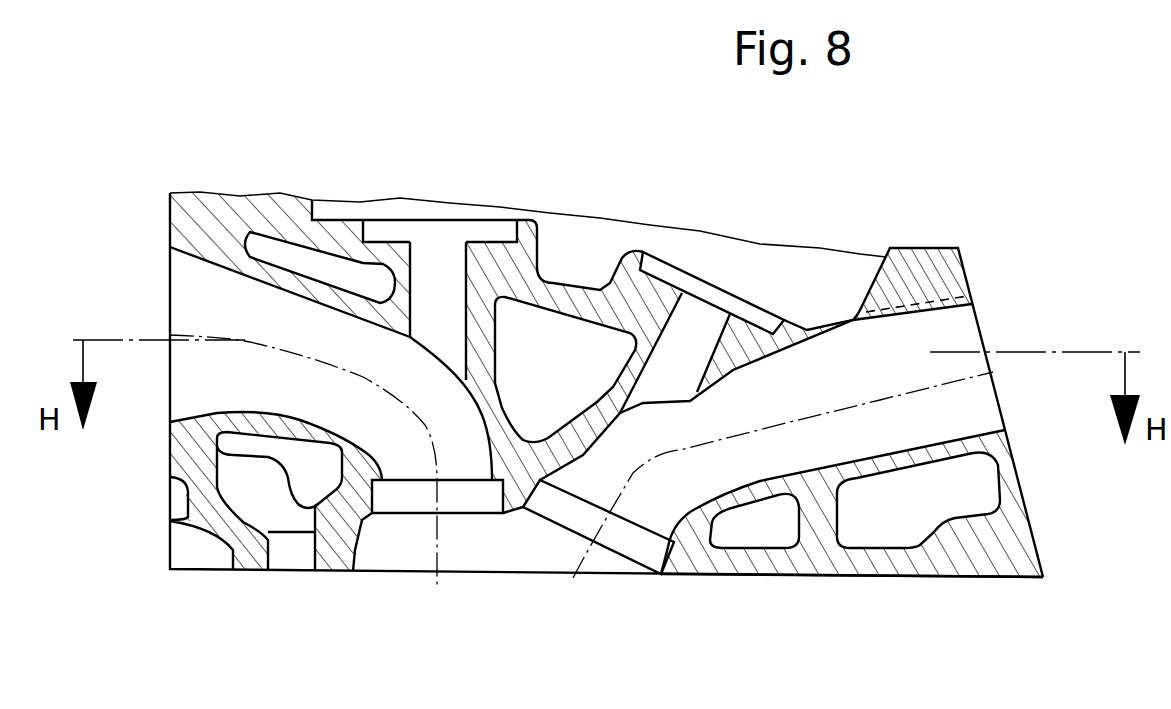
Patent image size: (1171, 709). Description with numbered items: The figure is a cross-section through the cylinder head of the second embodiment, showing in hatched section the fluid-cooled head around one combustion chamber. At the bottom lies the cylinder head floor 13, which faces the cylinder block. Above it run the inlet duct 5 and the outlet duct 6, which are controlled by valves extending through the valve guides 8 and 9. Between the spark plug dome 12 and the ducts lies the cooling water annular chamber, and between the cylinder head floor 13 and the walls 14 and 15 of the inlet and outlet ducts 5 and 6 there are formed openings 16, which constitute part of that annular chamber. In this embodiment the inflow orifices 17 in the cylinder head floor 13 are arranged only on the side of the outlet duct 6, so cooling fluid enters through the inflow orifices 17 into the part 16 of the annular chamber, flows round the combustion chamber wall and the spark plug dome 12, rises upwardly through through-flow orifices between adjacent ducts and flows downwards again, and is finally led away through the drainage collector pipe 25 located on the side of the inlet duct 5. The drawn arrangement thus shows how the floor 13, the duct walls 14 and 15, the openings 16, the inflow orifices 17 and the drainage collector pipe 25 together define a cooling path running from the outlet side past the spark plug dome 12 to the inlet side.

The inlet duct 5 is at (987, 412).
The outlet duct 6 is at (203, 378).
The valve guide 8 is at (692, 378).
The valve guide 9 is at (424, 318).
The spark plug dome 12 is at (566, 378).
The cylinder head floor 13 is at (808, 578).
The wall of the inlet duct 14 is at (872, 466).
The wall of the outlet duct 15 is at (293, 413).
The opening 16 is at (257, 513).
The inflow orifice 17 is at (283, 560).
The drainage collector pipe 25 is at (983, 480).